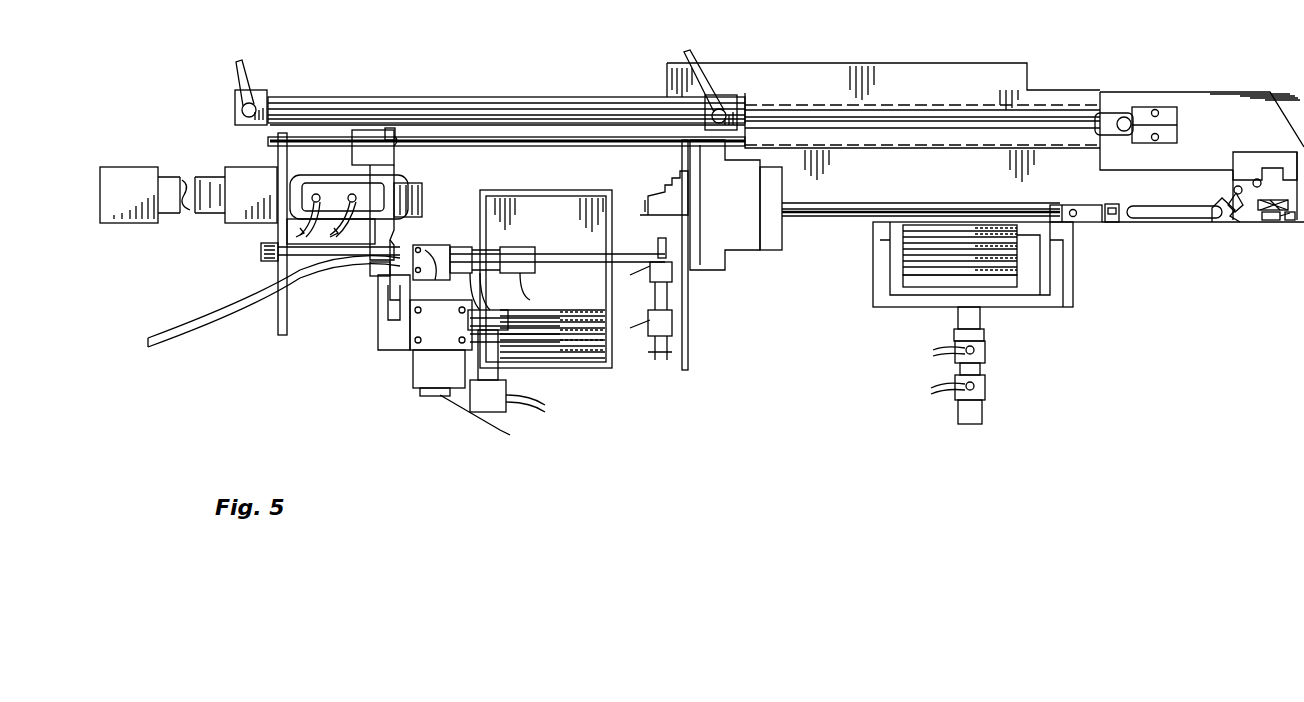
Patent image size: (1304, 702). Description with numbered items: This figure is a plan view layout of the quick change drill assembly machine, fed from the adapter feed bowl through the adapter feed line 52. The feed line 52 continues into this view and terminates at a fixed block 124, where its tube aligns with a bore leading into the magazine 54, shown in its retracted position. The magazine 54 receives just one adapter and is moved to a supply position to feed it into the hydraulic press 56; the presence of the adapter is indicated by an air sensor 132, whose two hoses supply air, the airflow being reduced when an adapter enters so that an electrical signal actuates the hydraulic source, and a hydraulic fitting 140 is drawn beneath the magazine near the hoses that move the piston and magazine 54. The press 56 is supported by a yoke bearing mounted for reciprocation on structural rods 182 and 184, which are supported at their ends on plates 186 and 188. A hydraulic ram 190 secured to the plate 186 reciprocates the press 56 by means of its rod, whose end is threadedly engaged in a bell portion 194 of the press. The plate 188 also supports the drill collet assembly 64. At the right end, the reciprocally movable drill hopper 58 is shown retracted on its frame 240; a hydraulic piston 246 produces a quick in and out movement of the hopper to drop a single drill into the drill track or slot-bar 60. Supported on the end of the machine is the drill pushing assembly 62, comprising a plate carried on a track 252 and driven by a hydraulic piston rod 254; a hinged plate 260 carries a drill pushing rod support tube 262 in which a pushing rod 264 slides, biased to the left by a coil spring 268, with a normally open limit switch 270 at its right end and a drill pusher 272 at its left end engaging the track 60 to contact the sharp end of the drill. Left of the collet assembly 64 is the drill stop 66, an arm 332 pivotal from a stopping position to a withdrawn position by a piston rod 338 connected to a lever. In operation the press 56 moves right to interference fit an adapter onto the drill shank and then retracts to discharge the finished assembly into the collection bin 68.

The adapter feed line 52 is at (178, 346).
The magazine 54 is at (405, 352).
The hydraulic press 56 is at (426, 192).
The drill hopper 58 is at (1018, 310).
The drill track 60 is at (835, 205).
The drill pushing assembly 62 is at (1212, 88).
The drill collet assembly 64 is at (745, 262).
The drill stop 66 is at (648, 198).
The collection bin 68 is at (585, 368).
The fixed block 124 is at (398, 275).
The air sensor 132 is at (423, 247).
The fitting 140 is at (505, 368).
The structural rod 182 is at (468, 140).
The structural rod 184 is at (300, 250).
The plate 186 is at (282, 156).
The plate 188 is at (700, 280).
The hydraulic ram 190 is at (130, 170).
The bell portion 194 is at (310, 170).
The frame 240 is at (1073, 300).
The hydraulic piston 246 is at (988, 366).
The track 252 is at (898, 113).
The hydraulic piston rod 254 is at (552, 108).
The plate 260 is at (1232, 178).
The drill pushing rod support tube 262 is at (1132, 222).
The pushing rod 264 is at (1112, 224).
The coil spring 268 is at (1222, 222).
The limit switch 270 is at (1290, 226).
The drill pusher 272 is at (1055, 205).
The arm 332 is at (666, 180).
The piston rod 338 is at (660, 258).